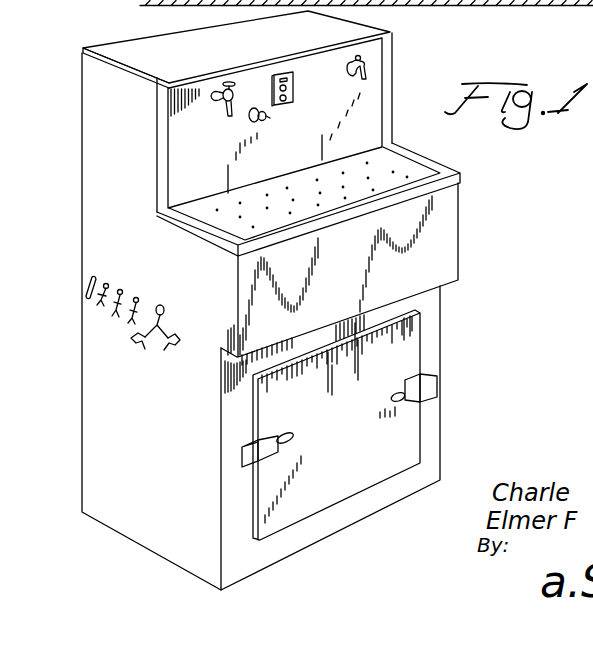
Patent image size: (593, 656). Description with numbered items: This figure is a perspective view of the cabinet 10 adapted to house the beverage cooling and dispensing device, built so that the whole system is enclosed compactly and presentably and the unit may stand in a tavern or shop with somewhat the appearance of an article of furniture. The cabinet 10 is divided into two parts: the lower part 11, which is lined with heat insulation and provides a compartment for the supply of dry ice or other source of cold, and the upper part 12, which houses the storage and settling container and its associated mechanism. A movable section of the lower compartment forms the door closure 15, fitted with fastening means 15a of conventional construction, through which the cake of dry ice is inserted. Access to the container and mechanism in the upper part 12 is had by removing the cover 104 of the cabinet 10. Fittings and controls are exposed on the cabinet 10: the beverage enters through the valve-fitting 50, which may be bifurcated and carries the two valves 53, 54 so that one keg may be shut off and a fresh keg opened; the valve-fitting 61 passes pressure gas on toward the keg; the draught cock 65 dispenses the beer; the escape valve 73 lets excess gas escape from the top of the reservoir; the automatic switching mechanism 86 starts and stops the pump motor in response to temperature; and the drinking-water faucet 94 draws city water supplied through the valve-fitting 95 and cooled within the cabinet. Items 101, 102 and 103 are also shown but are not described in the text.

The cabinet 10 is at (469, 228).
The lower part of the cabinet 11 is at (87, 445).
The upper part of the cabinet 12 is at (87, 108).
The door closure 15 is at (412, 439).
The fastening means 15a is at (300, 432).
The valve-fitting 50 is at (155, 307).
The valve 53 is at (152, 340).
The valve 54 is at (169, 333).
The valve-fitting 61 is at (104, 283).
The draught cock 65 is at (228, 112).
The escape valve 73 is at (269, 121).
The automatic switching mechanism 86 is at (294, 80).
The faucet 94 is at (365, 72).
The valve-fitting 95 is at (136, 298).
The hook 101 is at (122, 289).
The drainboard 102 is at (395, 168).
The bar hook 103 is at (90, 283).
The cover 104 is at (120, 47).